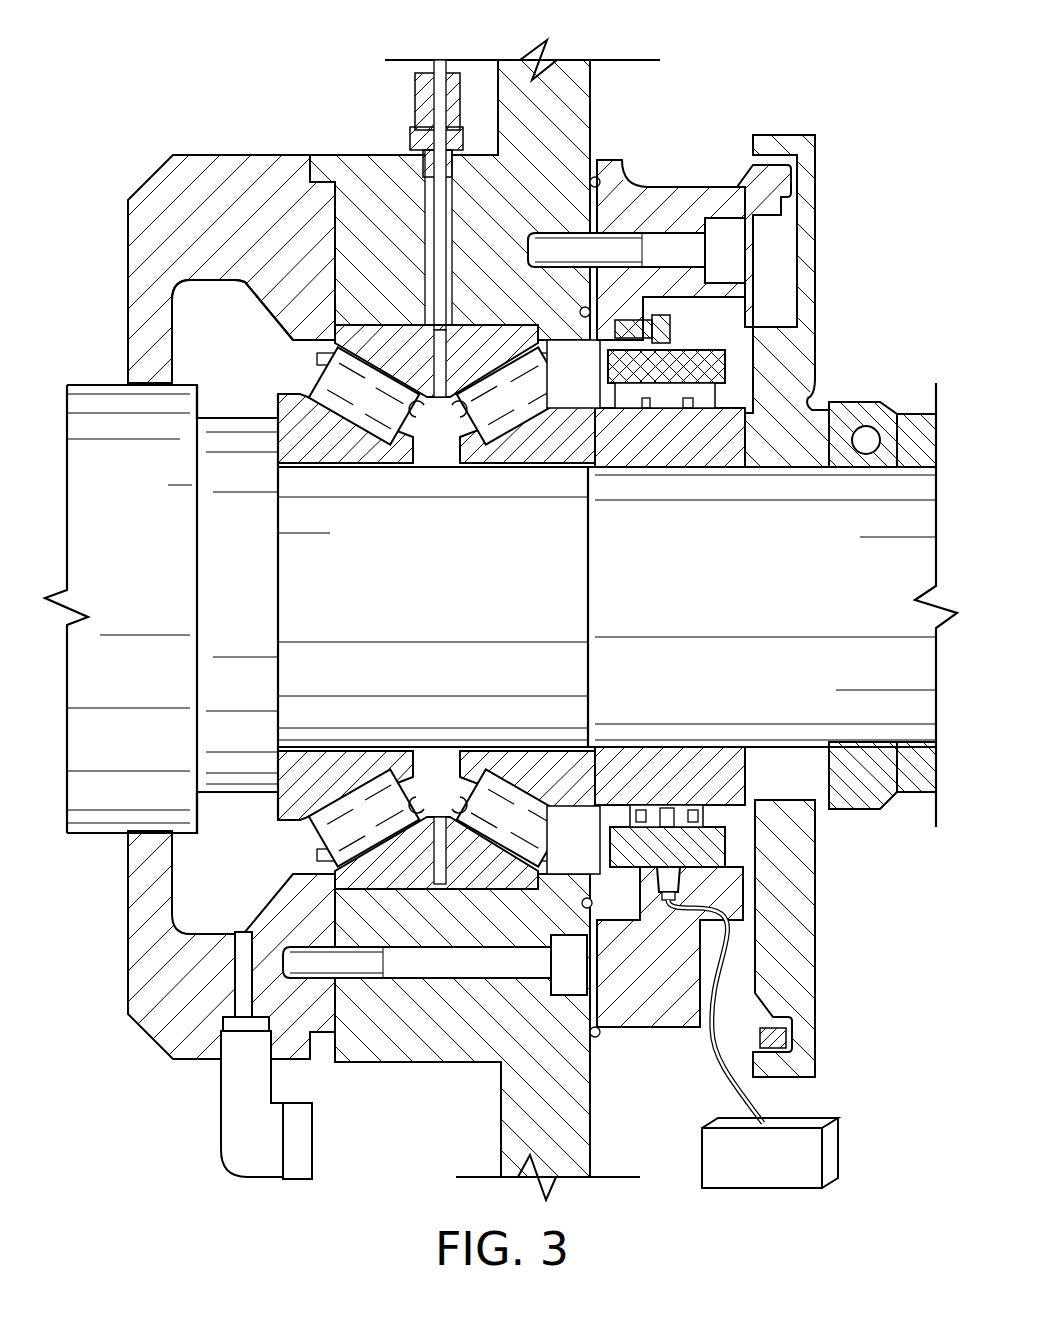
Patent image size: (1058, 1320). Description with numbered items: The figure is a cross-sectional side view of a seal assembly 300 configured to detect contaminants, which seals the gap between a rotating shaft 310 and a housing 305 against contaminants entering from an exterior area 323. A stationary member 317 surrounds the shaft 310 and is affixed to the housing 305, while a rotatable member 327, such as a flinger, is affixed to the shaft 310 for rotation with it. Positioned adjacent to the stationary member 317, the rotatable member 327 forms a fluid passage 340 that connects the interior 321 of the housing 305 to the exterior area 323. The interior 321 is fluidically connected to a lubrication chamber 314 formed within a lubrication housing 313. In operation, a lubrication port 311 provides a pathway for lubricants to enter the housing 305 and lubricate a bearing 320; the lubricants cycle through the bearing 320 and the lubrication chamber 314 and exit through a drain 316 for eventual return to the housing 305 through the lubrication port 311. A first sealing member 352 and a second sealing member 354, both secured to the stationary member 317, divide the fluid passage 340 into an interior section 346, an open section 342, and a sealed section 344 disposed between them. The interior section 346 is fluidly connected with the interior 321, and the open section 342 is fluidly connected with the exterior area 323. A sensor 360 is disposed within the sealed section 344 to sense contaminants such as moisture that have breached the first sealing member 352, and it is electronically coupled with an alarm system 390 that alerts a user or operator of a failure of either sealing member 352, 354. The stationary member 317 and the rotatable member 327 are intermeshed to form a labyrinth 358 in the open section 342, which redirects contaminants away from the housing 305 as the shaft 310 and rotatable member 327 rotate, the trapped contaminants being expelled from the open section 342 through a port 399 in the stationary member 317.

The seal assembly 300 is at (168, 94).
The housing 305 is at (582, 124).
The shaft 310 is at (735, 597).
The lubrication port 311 is at (414, 92).
The lubrication housing 313 is at (185, 195).
The lubrication chamber 314 is at (222, 330).
The drain 316 is at (245, 1130).
The stationary member 317 is at (686, 186).
The bearing 320 is at (385, 355).
The interior 321 is at (566, 377).
The exterior area 323 is at (744, 100).
The rotatable member 327 is at (795, 360).
The fluid passage 340 is at (725, 322).
The open section 342 is at (738, 872).
The sealed section 344 is at (668, 805).
The interior section 346 is at (583, 843).
The first sealing member 352 is at (700, 806).
The second sealing member 354 is at (636, 806).
The labyrinth 358 is at (790, 1037).
The sensor 360 is at (690, 884).
The alarm system 390 is at (785, 1167).
The port 399 is at (748, 1018).